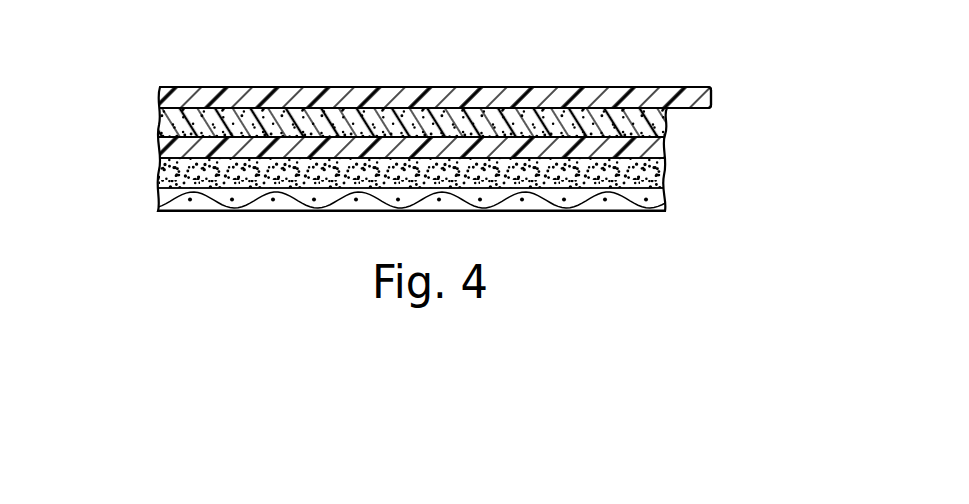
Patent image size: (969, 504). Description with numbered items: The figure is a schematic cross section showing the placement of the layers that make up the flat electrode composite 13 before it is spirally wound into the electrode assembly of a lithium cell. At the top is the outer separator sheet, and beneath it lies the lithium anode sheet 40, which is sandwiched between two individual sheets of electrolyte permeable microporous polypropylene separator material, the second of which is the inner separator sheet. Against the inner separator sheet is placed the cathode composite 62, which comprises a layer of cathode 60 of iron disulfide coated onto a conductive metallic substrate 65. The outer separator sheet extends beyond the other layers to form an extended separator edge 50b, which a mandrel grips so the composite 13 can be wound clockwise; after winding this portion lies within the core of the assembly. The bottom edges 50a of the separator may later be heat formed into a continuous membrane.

The flat electrode composite 13 is at (215, 49).
The lithium anode sheet 40 is at (667, 122).
The bottom edges of separator 50a is at (157, 147).
The extended separator edge 50b is at (712, 97).
The cathode 60 is at (667, 178).
The cathode composite 62 is at (150, 158).
The metallic substrate 65 is at (587, 205).